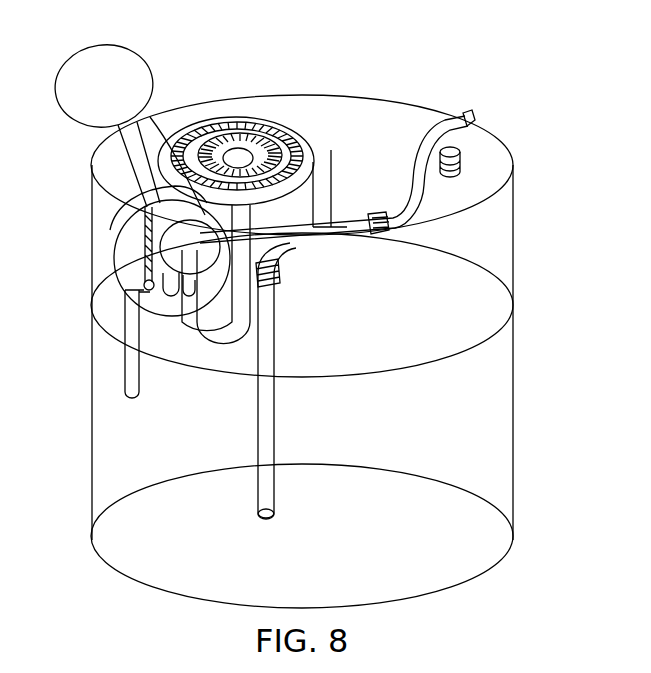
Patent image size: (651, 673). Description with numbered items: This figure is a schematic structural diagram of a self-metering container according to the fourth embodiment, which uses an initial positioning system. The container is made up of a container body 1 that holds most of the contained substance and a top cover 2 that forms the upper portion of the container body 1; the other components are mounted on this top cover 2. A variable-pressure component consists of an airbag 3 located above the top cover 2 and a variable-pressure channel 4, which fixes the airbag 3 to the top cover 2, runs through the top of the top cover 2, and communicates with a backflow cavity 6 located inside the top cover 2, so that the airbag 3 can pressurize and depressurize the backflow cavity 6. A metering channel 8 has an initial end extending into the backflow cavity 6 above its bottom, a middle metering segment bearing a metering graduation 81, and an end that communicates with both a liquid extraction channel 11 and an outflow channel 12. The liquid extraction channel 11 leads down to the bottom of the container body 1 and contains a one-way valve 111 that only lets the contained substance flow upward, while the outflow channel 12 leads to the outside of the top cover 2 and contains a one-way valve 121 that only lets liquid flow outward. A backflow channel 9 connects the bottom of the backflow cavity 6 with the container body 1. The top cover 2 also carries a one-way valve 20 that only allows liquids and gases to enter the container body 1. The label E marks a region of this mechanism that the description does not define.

The container body 1 is at (495, 415).
The top cover 2 is at (495, 240).
The airbag 3 is at (137, 73).
The variable-pressure channel 4 is at (125, 155).
The backflow cavity 6 is at (160, 228).
The metering channel 8 is at (218, 340).
The metering graduation 81 is at (240, 122).
The backflow channel 9 is at (145, 330).
The liquid extraction channel 11 is at (274, 333).
The one-way valve 111 is at (279, 276).
The outflow channel 12 is at (407, 203).
The one-way valve 121 is at (378, 220).
The one-way valve 20 is at (452, 158).
The pump mechanism E is at (112, 260).